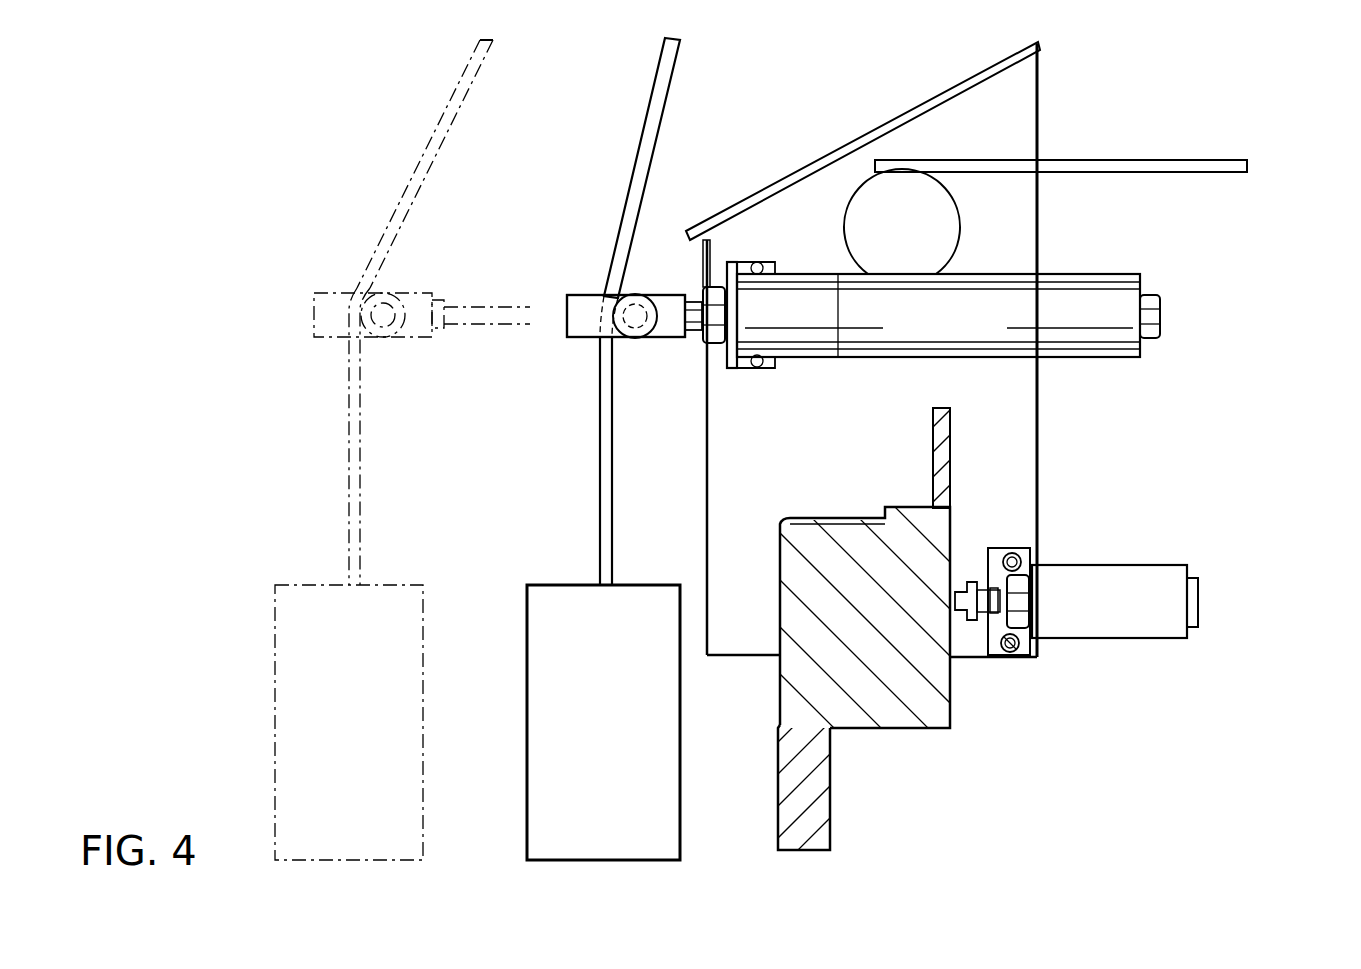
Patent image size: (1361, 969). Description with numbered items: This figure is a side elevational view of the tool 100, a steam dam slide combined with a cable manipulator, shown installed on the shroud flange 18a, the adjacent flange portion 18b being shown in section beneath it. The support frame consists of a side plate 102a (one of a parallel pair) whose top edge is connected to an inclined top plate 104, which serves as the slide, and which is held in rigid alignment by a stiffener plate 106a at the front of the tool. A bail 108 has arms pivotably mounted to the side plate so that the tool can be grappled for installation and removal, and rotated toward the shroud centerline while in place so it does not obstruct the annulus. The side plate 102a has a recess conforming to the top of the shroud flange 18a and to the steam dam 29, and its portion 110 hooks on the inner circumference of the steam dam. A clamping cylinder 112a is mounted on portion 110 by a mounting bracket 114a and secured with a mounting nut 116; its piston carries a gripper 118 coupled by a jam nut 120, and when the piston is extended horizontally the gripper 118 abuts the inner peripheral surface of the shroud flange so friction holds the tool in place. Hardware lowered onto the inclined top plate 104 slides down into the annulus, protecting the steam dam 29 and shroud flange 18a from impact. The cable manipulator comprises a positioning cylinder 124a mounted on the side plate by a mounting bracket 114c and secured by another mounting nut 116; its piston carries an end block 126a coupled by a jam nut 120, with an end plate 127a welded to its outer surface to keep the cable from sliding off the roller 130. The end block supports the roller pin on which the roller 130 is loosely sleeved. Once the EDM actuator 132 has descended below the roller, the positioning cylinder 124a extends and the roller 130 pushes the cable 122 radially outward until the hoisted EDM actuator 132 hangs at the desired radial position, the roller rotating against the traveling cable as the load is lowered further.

The tool assembly 100 is at (1118, 100).
The inclined top plate 104 is at (805, 170).
The bail 108 is at (1210, 160).
The portion of side plate 110 is at (1018, 475).
The cable 122 is at (634, 175).
The stiffener plate 106a is at (702, 250).
The side plate 102a is at (722, 498).
The roller 130 is at (600, 297).
The end plate 127a is at (585, 322).
The end block 126a is at (653, 338).
The jam nut 120 is at (700, 302).
The mounting nut 116 is at (716, 317).
The positioning cylinder 124a is at (1090, 275).
The mounting bracket 114c is at (742, 370).
The steam dam 29 is at (945, 445).
The shroud flange 18a is at (947, 672).
The workpiece flange 18b is at (820, 803).
The gripper 118 is at (958, 622).
The mounting bracket 114a is at (1033, 646).
The clamping cylinder 112a is at (1100, 565).
The EDM actuator 132 is at (527, 818).